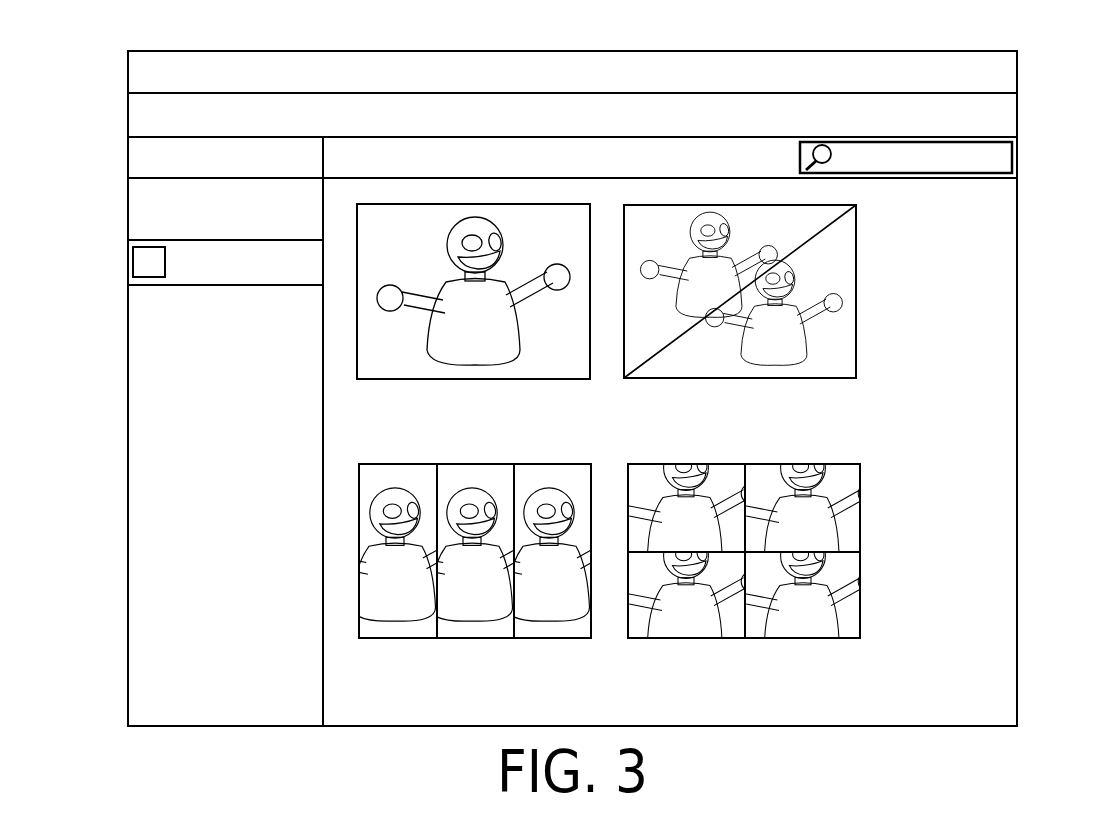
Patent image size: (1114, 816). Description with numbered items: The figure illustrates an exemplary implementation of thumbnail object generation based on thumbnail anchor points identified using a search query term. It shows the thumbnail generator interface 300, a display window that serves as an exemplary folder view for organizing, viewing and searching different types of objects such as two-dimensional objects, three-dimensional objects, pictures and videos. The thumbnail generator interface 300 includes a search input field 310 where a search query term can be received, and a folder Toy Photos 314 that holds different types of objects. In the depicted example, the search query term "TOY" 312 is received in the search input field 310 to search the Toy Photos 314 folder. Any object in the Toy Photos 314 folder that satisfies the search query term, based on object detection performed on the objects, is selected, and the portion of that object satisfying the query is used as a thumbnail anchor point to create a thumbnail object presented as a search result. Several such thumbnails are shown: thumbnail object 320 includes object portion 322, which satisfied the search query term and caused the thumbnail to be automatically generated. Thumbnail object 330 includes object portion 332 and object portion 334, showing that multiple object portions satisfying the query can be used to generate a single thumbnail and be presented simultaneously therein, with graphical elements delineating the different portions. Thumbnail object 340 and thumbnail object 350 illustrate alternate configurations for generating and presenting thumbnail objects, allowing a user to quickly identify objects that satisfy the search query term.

The thumbnail generator interface 300 is at (150, 50).
The search input field 310 is at (1006, 152).
The search query term "TOY" 312 is at (876, 150).
The folder Toy Photos 314 is at (156, 256).
The thumbnail object 320 is at (354, 380).
The object portion 322 is at (477, 232).
The thumbnail object 330 is at (625, 379).
The object portion 332 is at (665, 274).
The object portion 334 is at (781, 366).
The thumbnail object 340 is at (357, 640).
The thumbnail object 350 is at (630, 640).